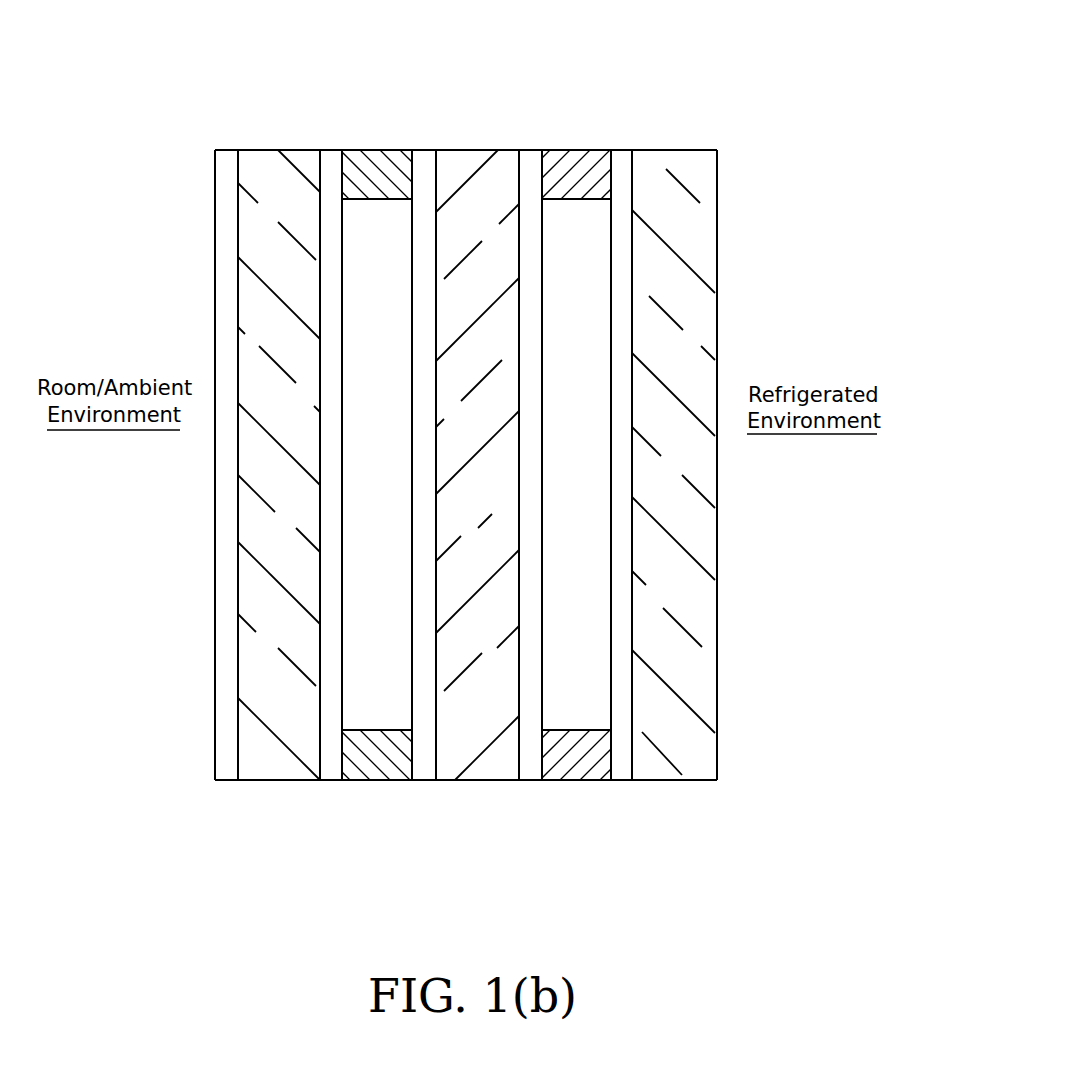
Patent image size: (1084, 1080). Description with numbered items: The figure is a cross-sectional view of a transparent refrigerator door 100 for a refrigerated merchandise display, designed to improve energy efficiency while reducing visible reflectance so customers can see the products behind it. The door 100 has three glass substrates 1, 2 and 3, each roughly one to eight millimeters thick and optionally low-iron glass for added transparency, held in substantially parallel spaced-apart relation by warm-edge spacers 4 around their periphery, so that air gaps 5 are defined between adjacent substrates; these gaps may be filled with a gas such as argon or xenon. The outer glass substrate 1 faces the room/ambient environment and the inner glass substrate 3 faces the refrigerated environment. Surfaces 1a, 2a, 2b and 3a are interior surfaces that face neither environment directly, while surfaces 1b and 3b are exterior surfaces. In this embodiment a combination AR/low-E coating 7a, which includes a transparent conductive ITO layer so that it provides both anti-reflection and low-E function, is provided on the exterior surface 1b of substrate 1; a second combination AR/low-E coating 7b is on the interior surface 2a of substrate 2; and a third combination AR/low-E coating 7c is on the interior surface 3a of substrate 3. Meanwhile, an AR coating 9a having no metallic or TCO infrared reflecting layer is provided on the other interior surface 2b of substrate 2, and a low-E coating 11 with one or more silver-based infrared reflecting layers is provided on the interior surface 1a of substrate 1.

The refrigerator door 100 is at (743, 73).
The outer glass substrate 1 is at (272, 763).
The interior surface of glass substrate 1 1a is at (320, 683).
The exterior surface of glass substrate 1 1b is at (238, 722).
The inner glass substrate 2 is at (477, 752).
The interior surface of glass substrate 2 2a is at (430, 197).
The interior surface of glass substrate 2 2b is at (521, 175).
The inner glass substrate 3 is at (675, 753).
The interior surface of inner glass substrate 3 3a is at (633, 637).
The exterior surface of glass substrate 3 3b is at (717, 628).
The spacers 4 is at (377, 173).
The air gaps 5 is at (375, 547).
The combination AR/low-E coating 7a is at (223, 750).
The combination AR/low-E coating 7b is at (423, 750).
The combination AR/low-E coating 7c is at (618, 750).
The AR coating 9a is at (529, 750).
The low-E coating 11 is at (330, 750).